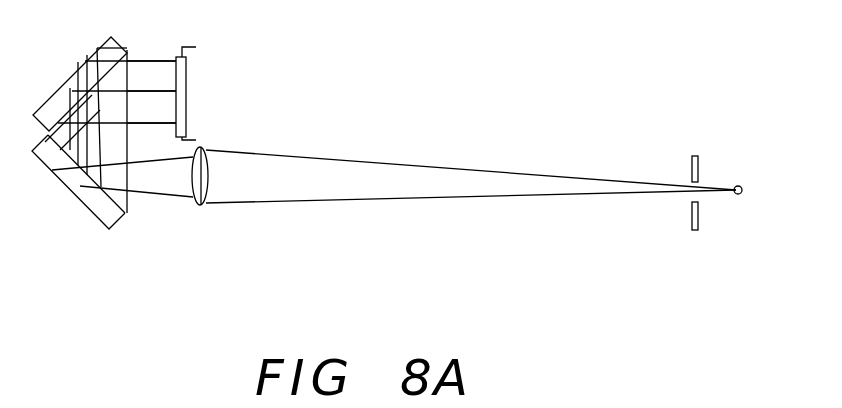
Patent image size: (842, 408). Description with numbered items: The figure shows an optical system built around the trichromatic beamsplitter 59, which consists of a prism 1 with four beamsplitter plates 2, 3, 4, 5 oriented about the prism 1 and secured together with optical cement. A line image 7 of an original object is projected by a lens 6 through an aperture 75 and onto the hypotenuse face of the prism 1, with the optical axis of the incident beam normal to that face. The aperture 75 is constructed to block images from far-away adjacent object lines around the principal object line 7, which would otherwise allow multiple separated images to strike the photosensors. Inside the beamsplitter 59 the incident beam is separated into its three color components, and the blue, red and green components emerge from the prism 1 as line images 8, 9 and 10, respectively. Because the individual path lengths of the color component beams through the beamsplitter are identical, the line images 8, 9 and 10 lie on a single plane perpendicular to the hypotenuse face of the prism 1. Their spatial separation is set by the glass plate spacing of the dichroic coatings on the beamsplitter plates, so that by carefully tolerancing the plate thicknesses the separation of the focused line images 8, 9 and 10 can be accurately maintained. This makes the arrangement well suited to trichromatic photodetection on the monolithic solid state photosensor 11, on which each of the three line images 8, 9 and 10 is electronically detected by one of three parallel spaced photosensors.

The prism 1 is at (128, 203).
The beamsplitter plate 2 is at (118, 222).
The beamsplitter plate 3 is at (112, 229).
The beamsplitter plate 4 is at (132, 50).
The beamsplitter plate 5 is at (109, 39).
The lens 6 is at (203, 205).
The line image 7 is at (742, 190).
The line image 8 is at (160, 69).
The line image 9 is at (160, 98).
The line image 10 is at (162, 127).
The monolithic solid state photosensor 11 is at (186, 110).
The trichromatic beamsplitter 59 is at (46, 197).
The aperture 75 is at (692, 158).